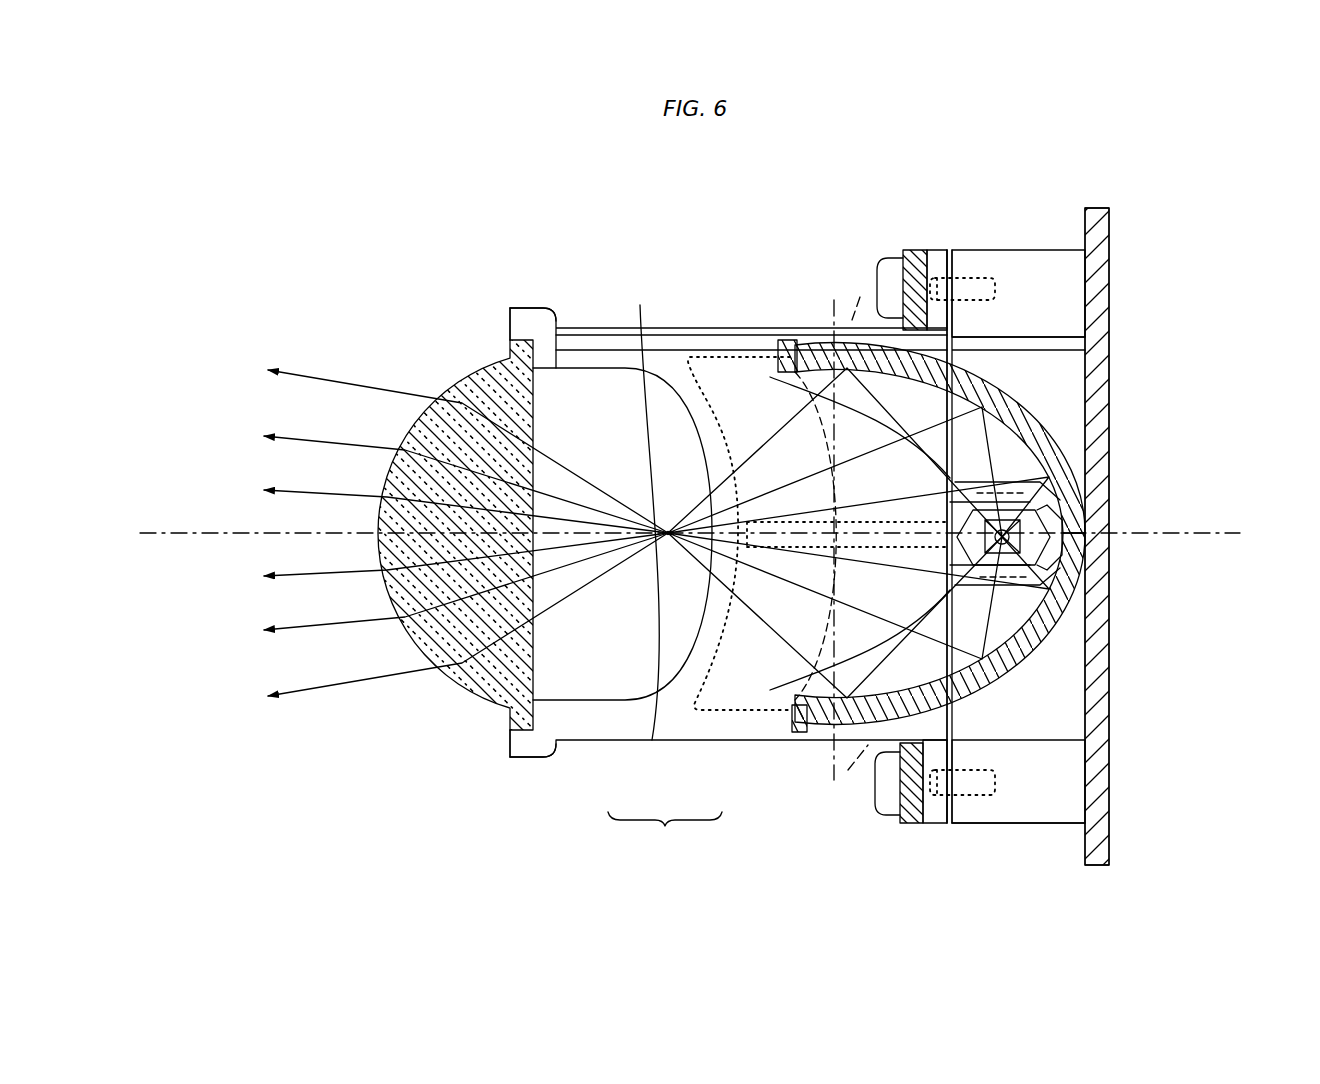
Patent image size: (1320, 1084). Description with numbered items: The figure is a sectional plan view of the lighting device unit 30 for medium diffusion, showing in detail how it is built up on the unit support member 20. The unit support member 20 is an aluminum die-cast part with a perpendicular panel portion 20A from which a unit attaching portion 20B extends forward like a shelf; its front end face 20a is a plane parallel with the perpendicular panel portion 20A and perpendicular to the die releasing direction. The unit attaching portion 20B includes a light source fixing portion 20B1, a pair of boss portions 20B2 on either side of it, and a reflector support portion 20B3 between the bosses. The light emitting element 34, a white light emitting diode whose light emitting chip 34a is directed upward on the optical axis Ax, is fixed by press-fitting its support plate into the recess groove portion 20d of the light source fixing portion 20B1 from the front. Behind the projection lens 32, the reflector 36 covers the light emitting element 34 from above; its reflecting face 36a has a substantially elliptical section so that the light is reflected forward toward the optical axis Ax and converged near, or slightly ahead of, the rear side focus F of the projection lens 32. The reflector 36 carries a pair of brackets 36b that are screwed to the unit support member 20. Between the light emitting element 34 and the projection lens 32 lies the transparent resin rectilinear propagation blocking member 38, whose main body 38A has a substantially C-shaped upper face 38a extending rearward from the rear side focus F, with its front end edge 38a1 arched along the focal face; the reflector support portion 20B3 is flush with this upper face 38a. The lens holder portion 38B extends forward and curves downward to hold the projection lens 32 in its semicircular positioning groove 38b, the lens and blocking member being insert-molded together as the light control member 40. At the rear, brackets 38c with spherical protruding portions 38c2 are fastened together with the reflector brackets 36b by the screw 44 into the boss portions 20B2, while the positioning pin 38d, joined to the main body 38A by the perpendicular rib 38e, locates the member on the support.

The unit support member 20 is at (1135, 312).
The perpendicular panel portion 20A is at (1115, 622).
The unit attaching portion 20B is at (968, 830).
The light source fixing portion 20B1 is at (1092, 370).
The boss portion 20B2 is at (1040, 265).
The reflector support portion 20B3 is at (1065, 680).
The front end face 20a is at (840, 773).
The recess groove portion 20d is at (1060, 548).
The lighting device unit for medium diffusion 30 is at (462, 262).
The projection lens 32 is at (462, 372).
The light emitting element 34 is at (1042, 517).
The light emitting chip 34a is at (1085, 565).
The reflector 36 is at (1052, 437).
The reflecting face 36a is at (832, 368).
The bracket 36b is at (884, 282).
The rectilinear propagation blocking member 38 is at (665, 830).
The main body 38A is at (757, 690).
The lens holder portion 38B is at (607, 725).
The upper face 38a is at (735, 372).
The front end edge 38a1 is at (643, 345).
The positioning groove 38b is at (508, 716).
The bracket 38c is at (915, 248).
The spherical protruding portion 38c2 is at (962, 288).
The positioning pin 38d is at (772, 345).
The perpendicular rib 38e is at (810, 720).
The light control member 40 is at (504, 752).
The screw 44 is at (858, 292).
The rear side focus F is at (656, 651).
The optical axis Ax is at (220, 530).